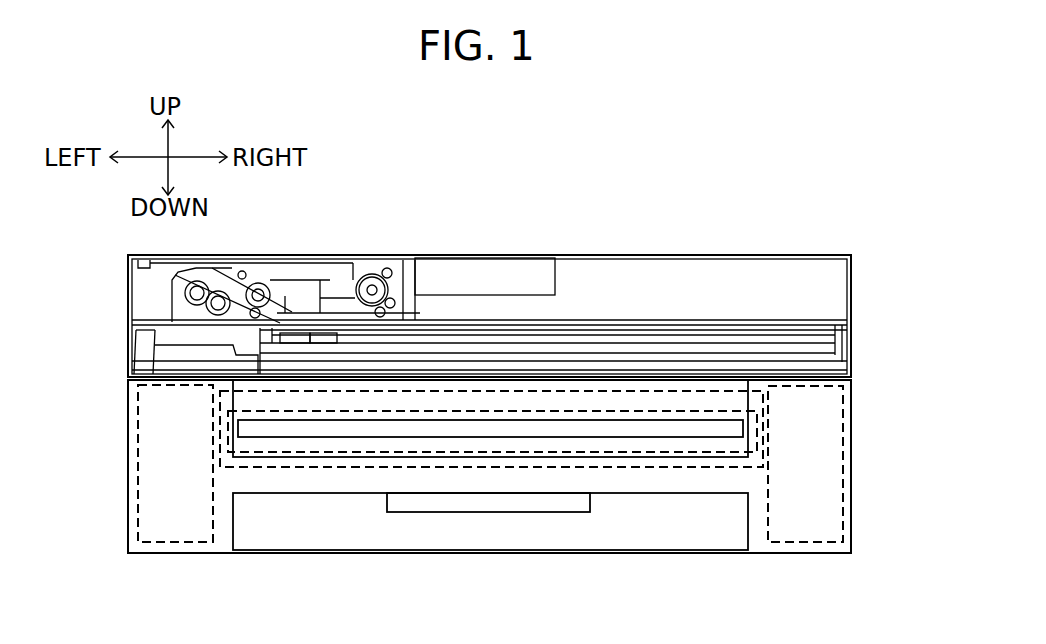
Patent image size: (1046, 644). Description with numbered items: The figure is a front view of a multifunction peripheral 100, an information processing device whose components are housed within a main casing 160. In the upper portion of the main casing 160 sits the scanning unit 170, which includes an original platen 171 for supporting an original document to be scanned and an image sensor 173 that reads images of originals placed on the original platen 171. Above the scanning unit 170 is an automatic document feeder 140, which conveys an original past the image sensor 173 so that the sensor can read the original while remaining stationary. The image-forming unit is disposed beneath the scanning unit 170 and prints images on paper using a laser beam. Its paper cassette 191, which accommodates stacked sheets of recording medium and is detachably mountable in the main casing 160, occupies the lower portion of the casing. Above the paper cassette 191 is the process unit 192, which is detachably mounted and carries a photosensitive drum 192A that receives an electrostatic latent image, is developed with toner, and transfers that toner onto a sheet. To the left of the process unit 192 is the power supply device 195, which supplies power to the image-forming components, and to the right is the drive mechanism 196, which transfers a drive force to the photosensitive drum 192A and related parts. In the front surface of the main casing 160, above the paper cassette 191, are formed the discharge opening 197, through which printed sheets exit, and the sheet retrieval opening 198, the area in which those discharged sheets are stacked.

The multifunction peripheral 100 is at (827, 218).
The automatic document feeder 140 is at (150, 298).
The main casing 160 is at (128, 431).
The scanning unit 170 is at (820, 335).
The original platen 171 is at (692, 325).
The image sensor 173 is at (230, 322).
The paper cassette 191 is at (718, 534).
The process unit 192 is at (575, 462).
The photosensitive drum 192A is at (763, 432).
The power supply device 195 is at (138, 515).
The drive mechanism 196 is at (848, 505).
The discharge opening 197 is at (374, 438).
The sheet retrieval opening 198 is at (258, 452).